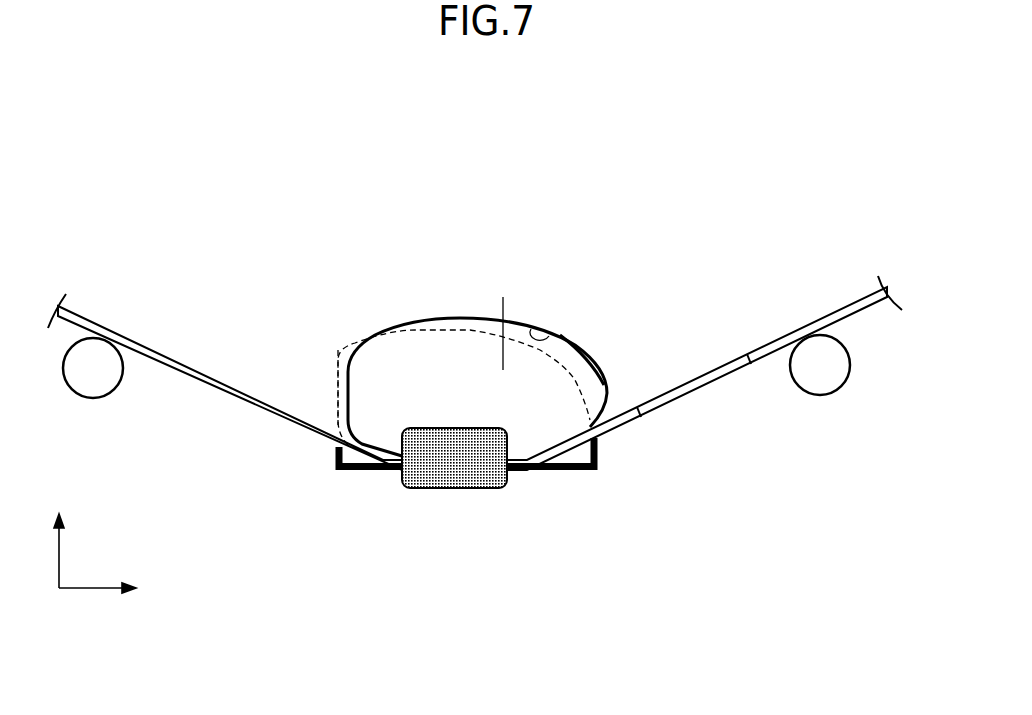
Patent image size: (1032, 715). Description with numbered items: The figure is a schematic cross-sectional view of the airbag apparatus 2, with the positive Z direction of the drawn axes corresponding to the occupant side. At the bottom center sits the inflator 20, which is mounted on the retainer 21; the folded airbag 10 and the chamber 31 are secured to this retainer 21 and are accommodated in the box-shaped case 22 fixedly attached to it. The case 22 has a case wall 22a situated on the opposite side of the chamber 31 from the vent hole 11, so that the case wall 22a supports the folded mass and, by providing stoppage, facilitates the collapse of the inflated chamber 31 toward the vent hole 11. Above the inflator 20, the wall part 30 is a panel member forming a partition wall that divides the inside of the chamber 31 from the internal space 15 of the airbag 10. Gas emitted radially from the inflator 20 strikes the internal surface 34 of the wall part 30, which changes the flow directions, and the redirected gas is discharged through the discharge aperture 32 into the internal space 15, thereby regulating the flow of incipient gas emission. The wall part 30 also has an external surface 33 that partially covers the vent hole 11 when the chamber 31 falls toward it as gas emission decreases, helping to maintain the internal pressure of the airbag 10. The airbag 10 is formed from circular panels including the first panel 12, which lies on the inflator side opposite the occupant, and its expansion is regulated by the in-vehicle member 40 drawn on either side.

The airbag apparatus 2 is at (165, 121).
The airbag 10 is at (492, 373).
The vent hole 11 is at (753, 377).
The first panel 12 is at (233, 402).
The internal space 15 is at (265, 237).
The inflator 20 is at (457, 478).
The retainer 21 is at (558, 470).
The case 22 is at (580, 387).
The case wall 22a is at (345, 408).
The wall part 30 is at (460, 319).
The chamber 31 is at (398, 311).
The discharge aperture 32 is at (506, 321).
The external surface 33 is at (575, 348).
The internal surface 34 is at (547, 333).
The in-vehicle member 40 is at (83, 400).